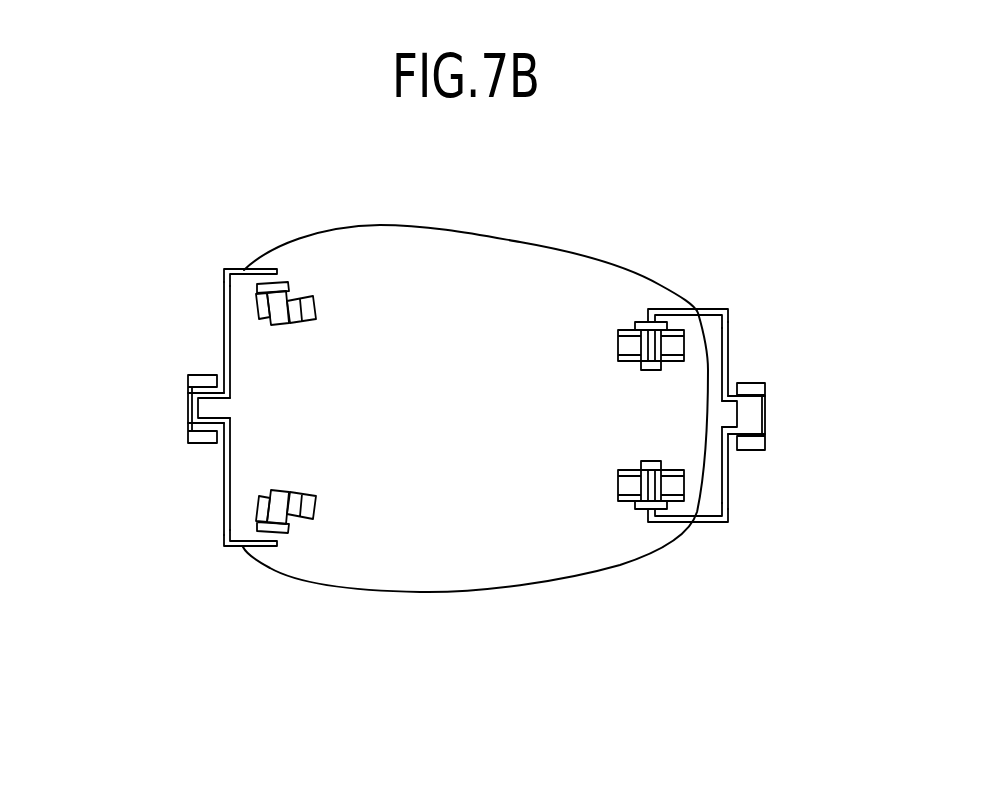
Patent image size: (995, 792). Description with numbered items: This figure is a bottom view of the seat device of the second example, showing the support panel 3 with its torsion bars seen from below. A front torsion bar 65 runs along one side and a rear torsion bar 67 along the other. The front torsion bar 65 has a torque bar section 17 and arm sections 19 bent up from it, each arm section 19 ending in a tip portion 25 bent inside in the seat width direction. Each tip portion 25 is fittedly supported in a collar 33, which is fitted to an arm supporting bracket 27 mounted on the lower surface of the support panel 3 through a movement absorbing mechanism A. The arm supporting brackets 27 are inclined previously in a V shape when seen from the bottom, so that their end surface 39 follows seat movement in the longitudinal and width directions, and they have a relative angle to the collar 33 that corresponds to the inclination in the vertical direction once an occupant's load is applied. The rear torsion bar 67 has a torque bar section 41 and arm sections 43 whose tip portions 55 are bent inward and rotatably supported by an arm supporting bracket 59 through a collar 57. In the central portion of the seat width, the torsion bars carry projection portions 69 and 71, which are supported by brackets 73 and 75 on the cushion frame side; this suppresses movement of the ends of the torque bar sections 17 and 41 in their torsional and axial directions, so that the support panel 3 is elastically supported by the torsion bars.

The support panel 3 is at (538, 243).
The torque bar section 17 is at (224, 328).
The arm section 19 is at (226, 270).
The tip portion 25 is at (281, 270).
The arm supporting bracket 27 is at (316, 316).
The collar 33 is at (277, 326).
The end surface 39 is at (312, 299).
The torque bar section 41 is at (728, 335).
The arm section 43 is at (712, 309).
The tip portion 55 is at (652, 322).
The collar 57 is at (644, 460).
The arm supporting bracket 59 is at (618, 345).
The front torsion bar 65 is at (194, 416).
The rear torsion bar 67 is at (737, 415).
The projection portion 69 is at (200, 410).
The projection portion 71 is at (752, 416).
The bracket 73 is at (190, 380).
The bracket 75 is at (752, 388).
The movement absorbing mechanism A is at (332, 378).